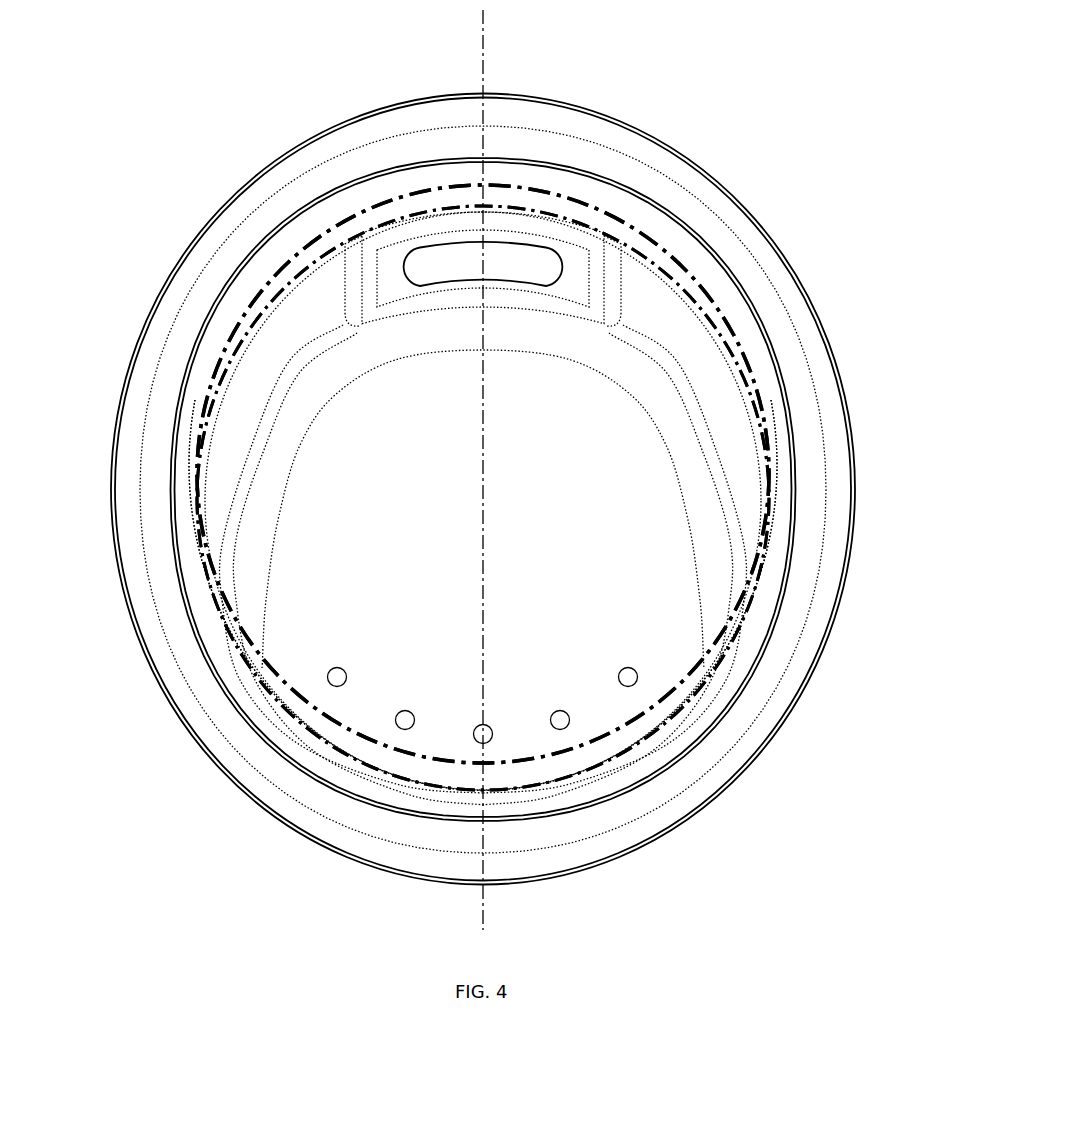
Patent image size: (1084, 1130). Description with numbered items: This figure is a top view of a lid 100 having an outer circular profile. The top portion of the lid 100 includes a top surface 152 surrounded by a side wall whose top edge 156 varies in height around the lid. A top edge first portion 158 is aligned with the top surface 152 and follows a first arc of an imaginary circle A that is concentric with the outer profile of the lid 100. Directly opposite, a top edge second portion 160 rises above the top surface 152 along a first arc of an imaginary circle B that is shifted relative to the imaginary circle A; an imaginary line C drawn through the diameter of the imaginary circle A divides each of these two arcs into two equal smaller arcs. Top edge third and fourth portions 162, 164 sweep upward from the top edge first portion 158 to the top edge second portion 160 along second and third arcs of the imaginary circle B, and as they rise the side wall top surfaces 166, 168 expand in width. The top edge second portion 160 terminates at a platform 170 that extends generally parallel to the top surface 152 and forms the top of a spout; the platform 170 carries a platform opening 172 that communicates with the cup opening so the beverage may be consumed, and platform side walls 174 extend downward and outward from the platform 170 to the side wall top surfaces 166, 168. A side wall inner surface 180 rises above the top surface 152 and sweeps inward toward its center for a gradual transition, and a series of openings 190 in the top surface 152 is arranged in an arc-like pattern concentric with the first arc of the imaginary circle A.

The lid 100 is at (196, 116).
The top surface 152 is at (567, 490).
The top edge 156 is at (777, 473).
The top edge first portion 158 is at (613, 758).
The top edge second portion 160 is at (458, 213).
The top edge third portion 162 is at (190, 501).
The top edge fourth portion 164 is at (777, 507).
The side wall top surface 166 is at (305, 315).
The side wall top surface 168 is at (677, 327).
The platform 170 is at (583, 263).
The platform opening 172 is at (437, 265).
The platform side walls 174 is at (358, 282).
The side wall inner surface 180 is at (300, 415).
The openings 190 is at (638, 677).
The imaginary circle A is at (308, 740).
The imaginary circle B is at (404, 199).
The imaginary line C is at (490, 68).